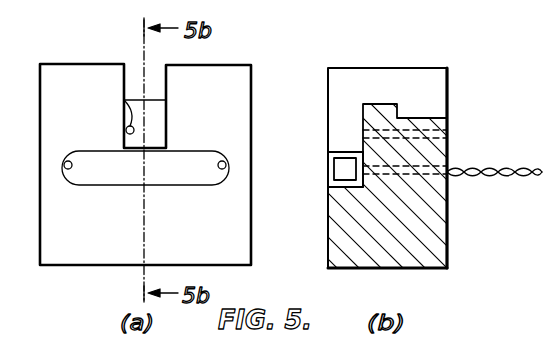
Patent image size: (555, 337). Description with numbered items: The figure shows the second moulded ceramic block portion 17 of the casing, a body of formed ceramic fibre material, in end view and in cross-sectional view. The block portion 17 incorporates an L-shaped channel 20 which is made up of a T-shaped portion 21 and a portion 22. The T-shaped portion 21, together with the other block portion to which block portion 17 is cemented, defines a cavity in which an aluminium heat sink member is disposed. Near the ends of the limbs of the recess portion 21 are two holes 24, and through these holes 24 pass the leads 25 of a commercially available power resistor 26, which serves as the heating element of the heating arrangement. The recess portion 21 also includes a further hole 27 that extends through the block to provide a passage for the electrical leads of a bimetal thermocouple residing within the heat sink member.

The block portion 17 is at (342, 268).
The L-shaped channel 20 is at (340, 92).
The T-shaped portion 21 is at (165, 162).
The portion 22 is at (406, 88).
The holes 24 is at (75, 153).
The leads 25 is at (524, 176).
The power resistor 26 is at (335, 170).
The further hole 27 is at (124, 107).